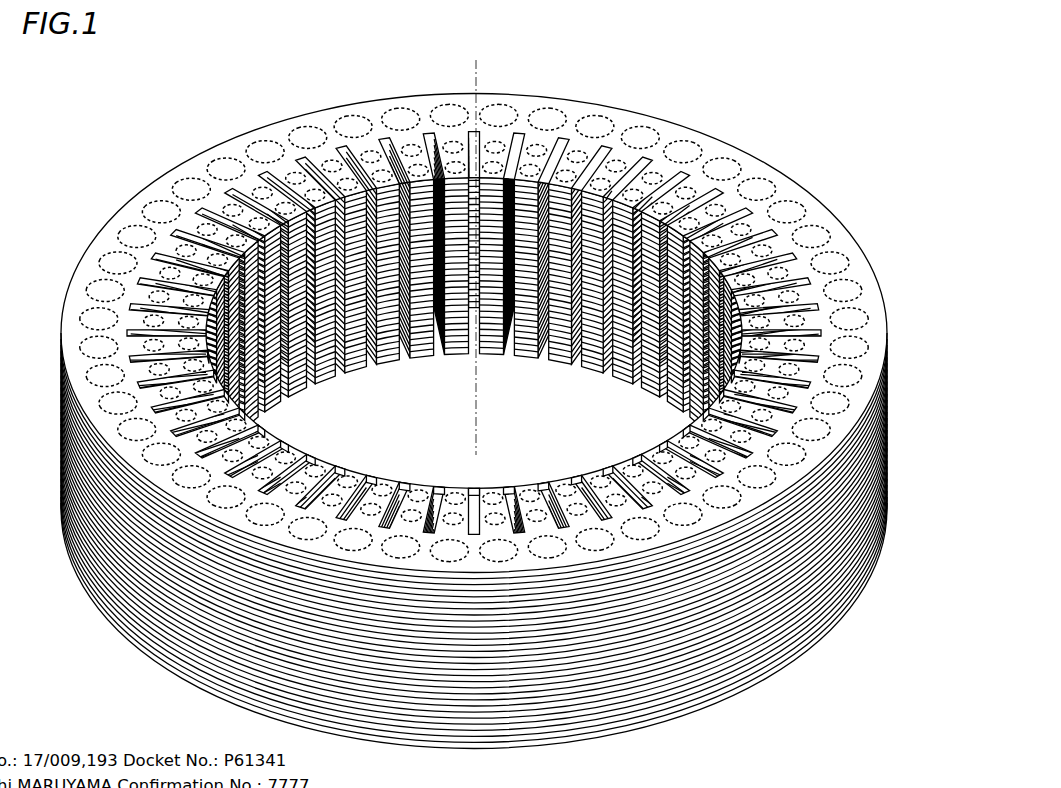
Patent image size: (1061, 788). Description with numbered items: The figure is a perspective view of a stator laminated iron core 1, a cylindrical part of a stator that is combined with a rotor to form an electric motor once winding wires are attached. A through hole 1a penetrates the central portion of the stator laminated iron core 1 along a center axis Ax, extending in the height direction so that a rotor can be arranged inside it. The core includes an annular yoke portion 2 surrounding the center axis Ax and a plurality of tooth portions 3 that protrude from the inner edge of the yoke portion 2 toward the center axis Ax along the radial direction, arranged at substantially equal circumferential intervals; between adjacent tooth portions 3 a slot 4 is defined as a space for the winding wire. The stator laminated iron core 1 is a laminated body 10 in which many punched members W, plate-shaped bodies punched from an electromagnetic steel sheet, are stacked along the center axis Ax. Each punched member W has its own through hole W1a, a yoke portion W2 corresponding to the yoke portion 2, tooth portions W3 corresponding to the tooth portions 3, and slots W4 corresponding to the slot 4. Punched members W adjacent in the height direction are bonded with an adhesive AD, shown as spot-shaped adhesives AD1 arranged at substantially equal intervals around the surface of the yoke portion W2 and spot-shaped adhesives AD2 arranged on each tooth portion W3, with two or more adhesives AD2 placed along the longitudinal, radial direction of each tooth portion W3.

The stator laminated iron core 1 is at (532, 399).
The laminated body 10 is at (892, 297).
The punched member W is at (858, 432).
The center axis Ax is at (478, 73).
The adhesive AD is at (235, 89).
The spot-shaped adhesive AD1 is at (491, 328).
The spot-shaped adhesive AD2 is at (491, 150).
The through hole 1a is at (474, 258).
The through hole W1a is at (562, 198).
The yoke portion 2 is at (491, 333).
The yoke portion W2 is at (843, 235).
The tooth portion 3 is at (750, 160).
The tooth portion W3 is at (707, 207).
The slot 4 is at (474, 322).
The slot W4 is at (337, 148).